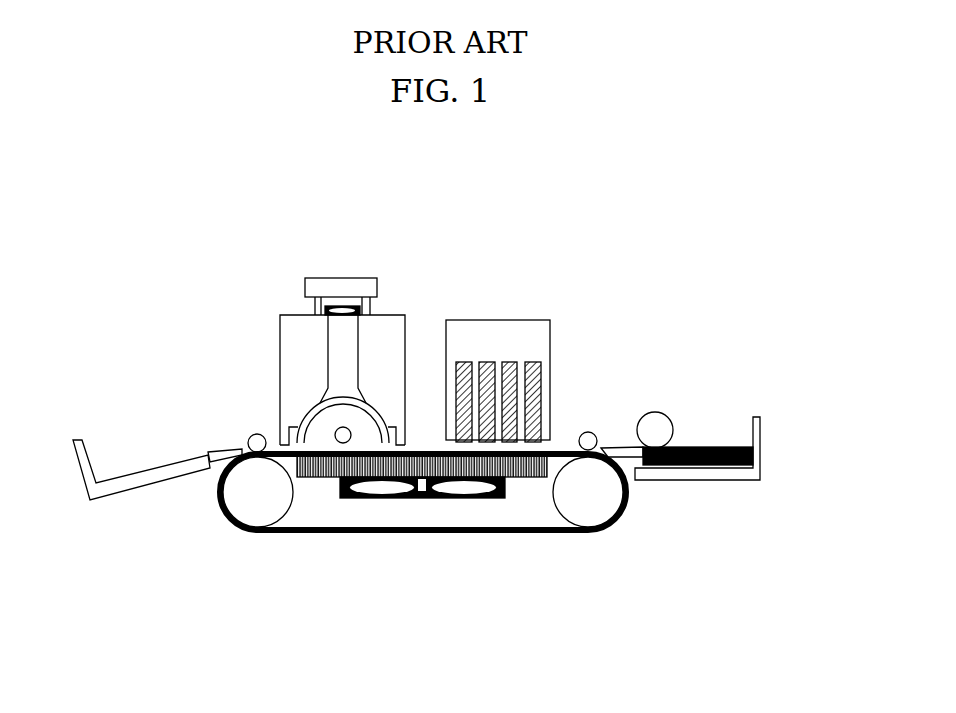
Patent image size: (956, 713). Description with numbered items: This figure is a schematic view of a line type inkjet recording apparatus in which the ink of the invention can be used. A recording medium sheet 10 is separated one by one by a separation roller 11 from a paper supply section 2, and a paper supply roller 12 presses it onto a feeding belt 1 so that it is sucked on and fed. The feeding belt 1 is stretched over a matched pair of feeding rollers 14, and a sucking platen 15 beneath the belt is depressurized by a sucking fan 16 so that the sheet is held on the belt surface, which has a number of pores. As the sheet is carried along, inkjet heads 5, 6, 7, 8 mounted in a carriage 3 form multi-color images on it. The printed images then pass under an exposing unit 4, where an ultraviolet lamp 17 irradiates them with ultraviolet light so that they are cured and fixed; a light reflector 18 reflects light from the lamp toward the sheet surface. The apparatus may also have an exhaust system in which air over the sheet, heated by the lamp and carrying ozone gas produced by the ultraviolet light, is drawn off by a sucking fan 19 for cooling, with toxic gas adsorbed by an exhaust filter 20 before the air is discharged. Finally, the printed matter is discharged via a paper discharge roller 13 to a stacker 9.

The feeding belt 1 is at (215, 503).
The paper supply section 2 is at (695, 470).
The carriage 3 is at (462, 340).
The exposing unit 4 is at (296, 373).
The inkjet head 5 is at (543, 362).
The inkjet head 6 is at (517, 362).
The inkjet head 7 is at (490, 362).
The inkjet head 8 is at (467, 362).
The stacker 9 is at (160, 482).
The recording medium sheet 10 is at (685, 447).
The separation roller 11 is at (653, 422).
The paper supply roller 12 is at (590, 432).
The paper discharge roller 13 is at (250, 437).
The feeding rollers 14 is at (248, 502).
The sucking platen 15 is at (522, 477).
The sucking fan 16 is at (423, 484).
The ultraviolet lamp 17 is at (345, 427).
The light reflector 18 is at (310, 423).
The sucking fan 19 is at (352, 310).
The exhaust filter 20 is at (338, 293).